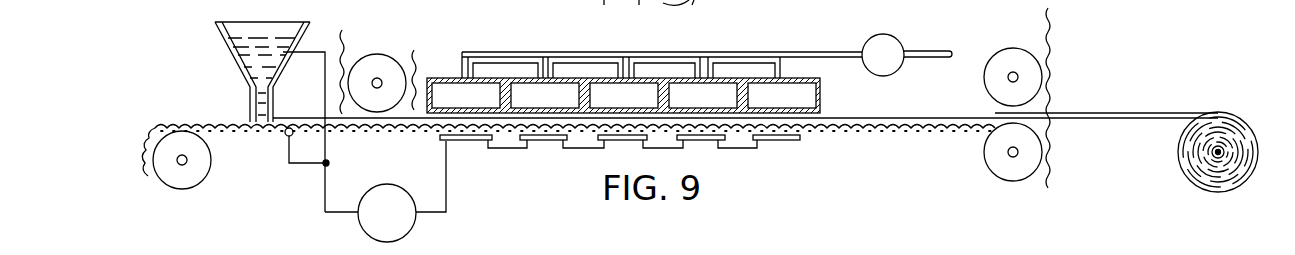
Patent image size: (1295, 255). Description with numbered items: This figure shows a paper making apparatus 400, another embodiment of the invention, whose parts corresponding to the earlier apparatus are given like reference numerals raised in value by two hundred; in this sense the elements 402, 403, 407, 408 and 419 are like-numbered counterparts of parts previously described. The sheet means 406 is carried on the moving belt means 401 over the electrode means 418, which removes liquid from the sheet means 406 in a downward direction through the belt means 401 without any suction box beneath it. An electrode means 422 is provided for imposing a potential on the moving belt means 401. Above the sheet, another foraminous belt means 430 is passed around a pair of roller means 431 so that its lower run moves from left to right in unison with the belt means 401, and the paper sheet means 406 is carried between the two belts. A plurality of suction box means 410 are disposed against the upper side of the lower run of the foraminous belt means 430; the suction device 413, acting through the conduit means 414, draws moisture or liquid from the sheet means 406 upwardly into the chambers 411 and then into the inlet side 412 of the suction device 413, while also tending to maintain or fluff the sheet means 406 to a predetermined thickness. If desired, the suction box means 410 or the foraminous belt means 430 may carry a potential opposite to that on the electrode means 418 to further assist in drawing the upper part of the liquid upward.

The paper making apparatus 400 is at (1093, 63).
The moving belt means 401 is at (222, 129).
The slurry 402 is at (250, 58).
The hopper 403 is at (215, 26).
The sheet means 406 is at (1058, 112).
The take-up roll 407 is at (1185, 148).
The roller 408 is at (198, 170).
The suction box means 410 is at (447, 80).
The chambers 411 is at (797, 88).
The inlet side 412 is at (861, 44).
The suction device 413 is at (893, 44).
The conduit means 414 is at (712, 50).
The electrode means 418 is at (470, 141).
The motor 419 is at (403, 226).
The electrode means 422 is at (285, 137).
The foraminous belt means 430 is at (434, 74).
The roller means 431 is at (370, 64).